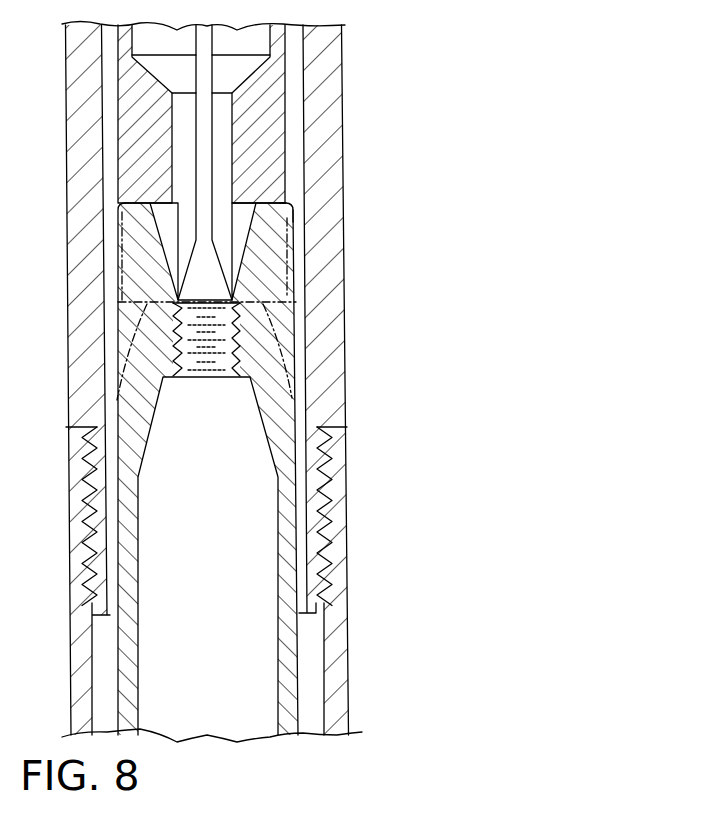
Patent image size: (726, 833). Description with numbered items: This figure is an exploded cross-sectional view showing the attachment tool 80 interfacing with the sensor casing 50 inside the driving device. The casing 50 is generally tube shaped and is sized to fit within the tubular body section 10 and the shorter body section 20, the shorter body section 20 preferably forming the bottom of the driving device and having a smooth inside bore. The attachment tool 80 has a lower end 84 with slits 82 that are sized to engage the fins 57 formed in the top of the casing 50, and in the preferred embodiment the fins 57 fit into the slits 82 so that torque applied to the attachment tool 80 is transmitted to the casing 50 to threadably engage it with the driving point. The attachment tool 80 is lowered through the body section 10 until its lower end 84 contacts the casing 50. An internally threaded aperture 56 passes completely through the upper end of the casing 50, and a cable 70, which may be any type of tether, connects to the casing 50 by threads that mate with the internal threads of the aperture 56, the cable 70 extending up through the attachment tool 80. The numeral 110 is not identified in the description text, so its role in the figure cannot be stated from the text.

The tubular body section 10 is at (323, 43).
The upper housing section 110 is at (325, 72).
The cable 70 is at (207, 150).
The attachment tool 80 is at (283, 179).
The fins 57 is at (297, 214).
The slits 82 is at (247, 201).
The lower end 84 is at (293, 314).
The internally threaded aperture 56 is at (237, 343).
The shorter body section 20 is at (347, 662).
The sensor casing 50 is at (298, 683).